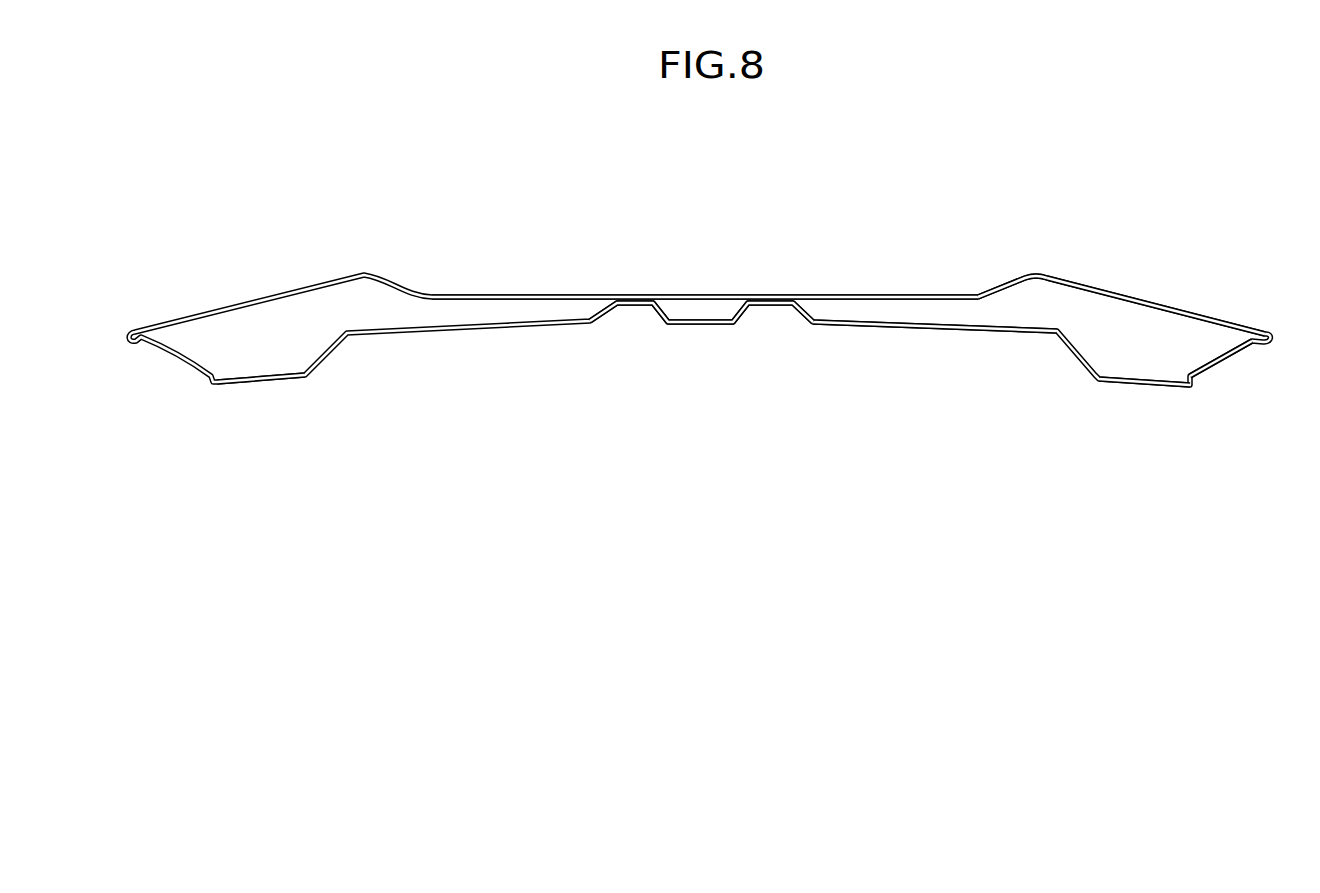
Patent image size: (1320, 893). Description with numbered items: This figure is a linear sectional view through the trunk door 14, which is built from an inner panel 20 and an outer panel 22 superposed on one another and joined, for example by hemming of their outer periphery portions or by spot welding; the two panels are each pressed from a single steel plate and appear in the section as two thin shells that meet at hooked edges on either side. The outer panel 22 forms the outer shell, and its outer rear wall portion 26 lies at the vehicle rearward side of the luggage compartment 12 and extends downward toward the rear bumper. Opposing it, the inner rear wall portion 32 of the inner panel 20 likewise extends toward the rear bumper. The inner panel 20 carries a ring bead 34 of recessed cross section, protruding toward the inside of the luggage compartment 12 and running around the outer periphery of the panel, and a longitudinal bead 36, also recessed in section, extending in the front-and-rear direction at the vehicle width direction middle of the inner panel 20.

The luggage compartment 12 is at (704, 565).
The trunk door 14 is at (877, 212).
The inner panel 20 is at (1222, 371).
The outer panel 22 is at (1174, 294).
The outer rear wall portion 26 is at (1077, 278).
The inner rear wall portion 32 is at (1012, 336).
The ring bead 34 is at (238, 387).
The longitudinal bead 36 is at (703, 326).